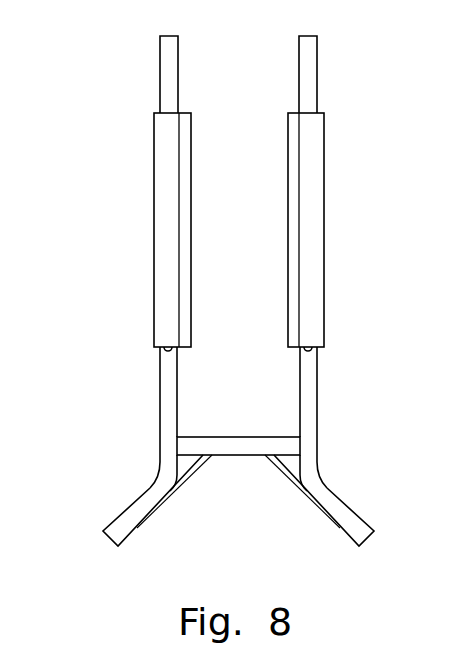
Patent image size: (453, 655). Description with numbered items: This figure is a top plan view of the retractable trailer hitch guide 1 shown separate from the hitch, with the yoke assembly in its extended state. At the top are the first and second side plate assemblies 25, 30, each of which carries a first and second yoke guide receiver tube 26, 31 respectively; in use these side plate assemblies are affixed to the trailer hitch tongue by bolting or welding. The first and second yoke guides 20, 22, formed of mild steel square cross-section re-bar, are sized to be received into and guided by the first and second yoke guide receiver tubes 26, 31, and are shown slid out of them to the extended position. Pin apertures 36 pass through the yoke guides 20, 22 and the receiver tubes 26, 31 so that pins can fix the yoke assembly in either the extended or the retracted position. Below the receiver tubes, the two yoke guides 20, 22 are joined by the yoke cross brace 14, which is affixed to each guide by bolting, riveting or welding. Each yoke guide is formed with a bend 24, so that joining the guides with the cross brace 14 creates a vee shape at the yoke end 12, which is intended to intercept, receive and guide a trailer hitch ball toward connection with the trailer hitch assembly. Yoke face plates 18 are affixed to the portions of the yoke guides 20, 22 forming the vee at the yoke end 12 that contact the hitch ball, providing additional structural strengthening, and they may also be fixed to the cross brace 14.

The retractable trailer hitch guide 1 is at (347, 174).
The yoke end 12 is at (235, 497).
The yoke cross brace 14 is at (205, 437).
The yoke face plates 18 is at (127, 545).
The first yoke guide 20 is at (160, 391).
The second yoke guide 22 is at (315, 375).
The bend 24 is at (166, 462).
The first side plate assembly 25 is at (140, 216).
The first yoke guide receiver tube 26 is at (168, 255).
The second side plate assembly 30 is at (330, 131).
The second yoke guide receiver tube 31 is at (318, 250).
The pin apertures 36 is at (164, 352).